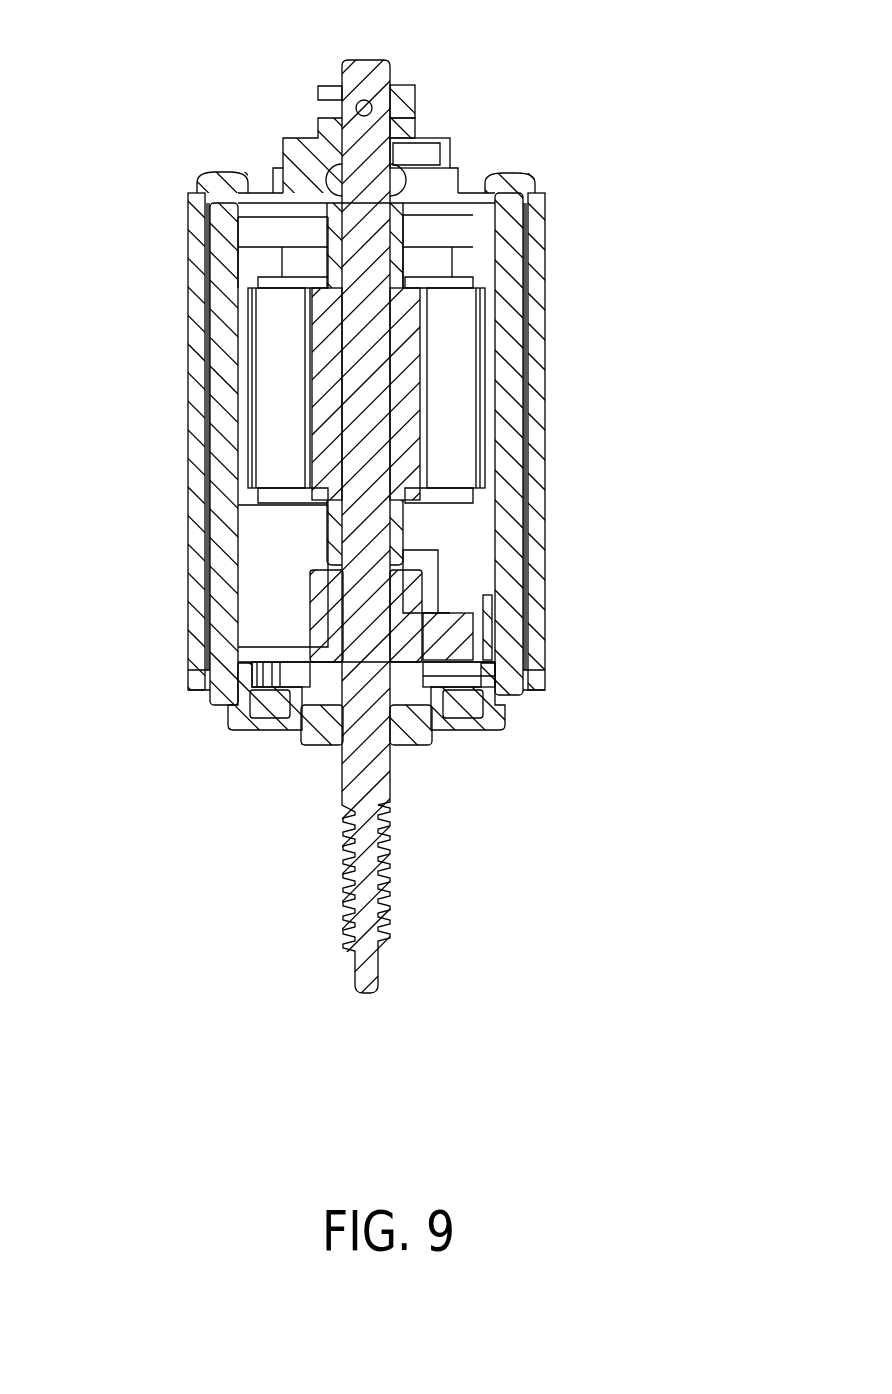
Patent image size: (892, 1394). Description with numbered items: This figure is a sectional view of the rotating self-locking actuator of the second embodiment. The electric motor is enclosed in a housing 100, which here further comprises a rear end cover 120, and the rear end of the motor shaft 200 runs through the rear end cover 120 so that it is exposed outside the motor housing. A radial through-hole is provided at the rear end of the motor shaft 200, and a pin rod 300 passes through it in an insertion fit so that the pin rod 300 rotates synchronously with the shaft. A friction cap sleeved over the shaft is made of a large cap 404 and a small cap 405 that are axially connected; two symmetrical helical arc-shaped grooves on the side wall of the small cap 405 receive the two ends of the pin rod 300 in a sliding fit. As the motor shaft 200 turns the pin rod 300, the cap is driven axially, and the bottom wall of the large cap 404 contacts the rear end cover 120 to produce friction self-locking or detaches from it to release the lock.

The housing 100 is at (446, 697).
The rear end cover 120 is at (477, 200).
The motor shaft 200 is at (340, 188).
The pin rod 300 is at (360, 190).
The large cap 404 is at (445, 147).
The small cap 405 is at (412, 92).